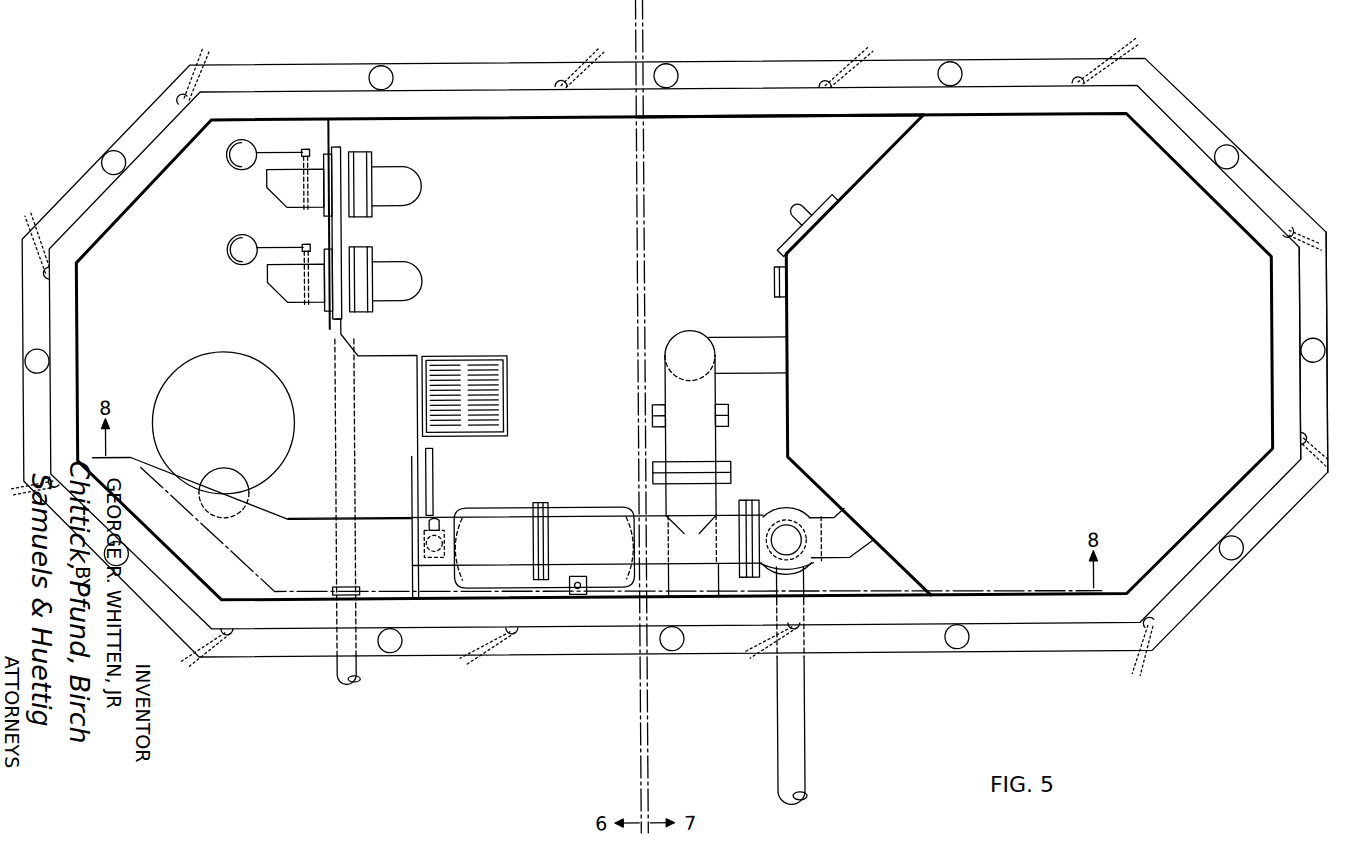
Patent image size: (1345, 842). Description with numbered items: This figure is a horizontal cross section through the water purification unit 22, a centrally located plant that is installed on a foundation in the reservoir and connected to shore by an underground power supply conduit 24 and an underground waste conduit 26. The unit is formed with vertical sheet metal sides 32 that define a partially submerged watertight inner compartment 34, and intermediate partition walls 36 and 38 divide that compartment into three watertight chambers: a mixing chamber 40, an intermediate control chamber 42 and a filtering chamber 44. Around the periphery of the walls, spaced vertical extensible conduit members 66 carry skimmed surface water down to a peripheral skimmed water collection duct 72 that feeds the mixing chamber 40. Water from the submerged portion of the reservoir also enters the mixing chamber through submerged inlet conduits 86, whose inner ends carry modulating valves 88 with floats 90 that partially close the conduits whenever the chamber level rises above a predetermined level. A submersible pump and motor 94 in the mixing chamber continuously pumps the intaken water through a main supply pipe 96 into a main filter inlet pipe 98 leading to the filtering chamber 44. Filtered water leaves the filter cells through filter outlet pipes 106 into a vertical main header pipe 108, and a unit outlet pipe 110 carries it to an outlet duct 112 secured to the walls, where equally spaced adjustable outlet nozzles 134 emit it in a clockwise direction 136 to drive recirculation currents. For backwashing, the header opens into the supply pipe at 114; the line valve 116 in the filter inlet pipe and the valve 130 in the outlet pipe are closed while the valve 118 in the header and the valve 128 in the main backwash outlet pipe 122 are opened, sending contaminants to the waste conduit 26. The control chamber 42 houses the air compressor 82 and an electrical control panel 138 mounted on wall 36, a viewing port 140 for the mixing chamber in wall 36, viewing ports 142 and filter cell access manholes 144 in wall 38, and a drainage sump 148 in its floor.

The water purification unit 22 is at (1212, 106).
The underground power supply conduit 24 is at (334, 672).
The underground waste conduit 26 is at (800, 712).
The vertical sheet metal sides 32 is at (553, 121).
The inner compartment 34 is at (705, 148).
The partition wall 36 is at (355, 352).
The partition wall 38 is at (871, 170).
The mixing chamber 40 is at (193, 322).
The intermediate control chamber 42 is at (560, 286).
The filtering chamber 44 is at (1043, 361).
The extensible conduit members 66 is at (108, 158).
The peripheral skimmed water collection duct 72 is at (1312, 300).
The air compressor 82 is at (505, 511).
The submerged inlet conduits 86 is at (425, 187).
The modulating valves 88 is at (362, 160).
The floats 90 is at (232, 160).
The submersible pump and motor 94 is at (210, 414).
The main supply pipe 96 is at (575, 527).
The main filter inlet pipe 98 is at (843, 562).
The filter outlet pipes 106 is at (740, 344).
The vertical main header pipe 108 is at (683, 346).
The unit outlet pipe 110 is at (716, 445).
The outlet duct 112 is at (1300, 392).
The header opening into supply pipe 114 is at (683, 537).
The line valve 116 is at (750, 578).
The valve 118 is at (731, 476).
The main backwash outlet pipe 122 is at (785, 510).
The line valve 128 is at (810, 568).
The line valve 130 is at (729, 417).
The outlet nozzles 134 is at (180, 102).
The clockwise emission direction 136 is at (200, 58).
The electrical control panel 138 is at (345, 242).
The viewing port 140 is at (436, 486).
The viewing ports 142 is at (775, 286).
The filter cell access manholes 144 is at (786, 242).
The drainage sump 148 is at (478, 372).